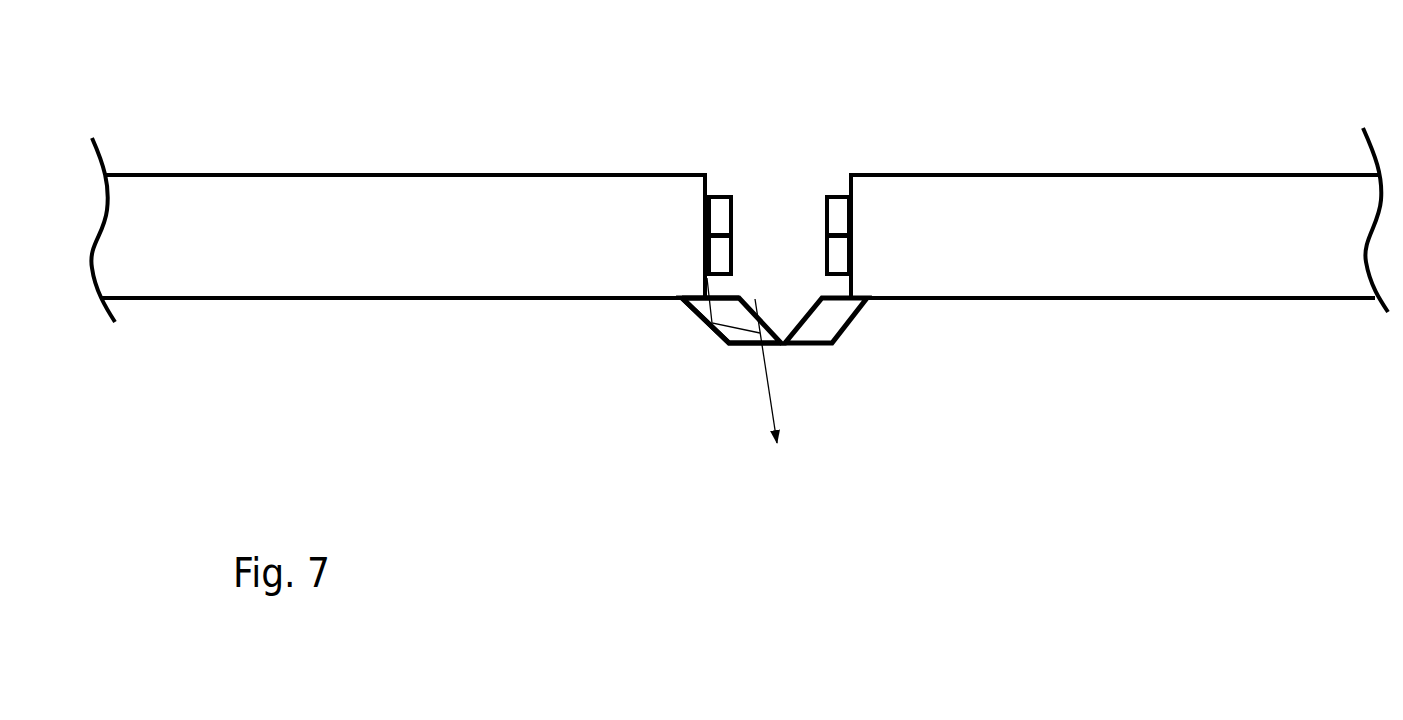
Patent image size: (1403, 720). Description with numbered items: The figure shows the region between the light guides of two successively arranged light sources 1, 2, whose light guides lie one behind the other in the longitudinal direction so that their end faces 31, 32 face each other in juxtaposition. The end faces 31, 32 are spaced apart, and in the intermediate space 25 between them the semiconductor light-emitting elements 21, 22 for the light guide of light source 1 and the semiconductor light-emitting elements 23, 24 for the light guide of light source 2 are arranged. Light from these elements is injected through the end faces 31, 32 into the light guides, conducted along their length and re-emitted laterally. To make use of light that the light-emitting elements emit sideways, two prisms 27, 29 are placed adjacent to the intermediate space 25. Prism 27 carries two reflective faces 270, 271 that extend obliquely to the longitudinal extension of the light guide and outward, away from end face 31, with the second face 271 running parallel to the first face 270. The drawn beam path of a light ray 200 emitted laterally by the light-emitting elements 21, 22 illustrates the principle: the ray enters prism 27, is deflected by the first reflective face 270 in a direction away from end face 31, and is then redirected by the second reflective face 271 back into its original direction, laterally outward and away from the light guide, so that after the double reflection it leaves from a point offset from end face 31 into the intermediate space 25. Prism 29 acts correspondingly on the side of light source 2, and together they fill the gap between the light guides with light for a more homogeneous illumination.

The light source 1 is at (446, 300).
The light source 2 is at (1080, 277).
The semiconductor light-emitting element 21 is at (720, 195).
The semiconductor light-emitting element 22 is at (740, 247).
The semiconductor light-emitting element 23 is at (843, 196).
The semiconductor light-emitting element 24 is at (827, 250).
The intermediate space 25 is at (771, 200).
The prism 27 is at (708, 320).
The prism 29 is at (845, 335).
The end face 31 is at (700, 188).
The end face 32 is at (850, 193).
The light ray 200 is at (768, 415).
The first reflective face 270 is at (720, 343).
The second reflective face 271 is at (750, 314).